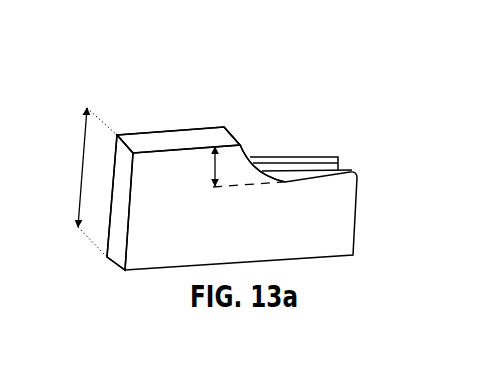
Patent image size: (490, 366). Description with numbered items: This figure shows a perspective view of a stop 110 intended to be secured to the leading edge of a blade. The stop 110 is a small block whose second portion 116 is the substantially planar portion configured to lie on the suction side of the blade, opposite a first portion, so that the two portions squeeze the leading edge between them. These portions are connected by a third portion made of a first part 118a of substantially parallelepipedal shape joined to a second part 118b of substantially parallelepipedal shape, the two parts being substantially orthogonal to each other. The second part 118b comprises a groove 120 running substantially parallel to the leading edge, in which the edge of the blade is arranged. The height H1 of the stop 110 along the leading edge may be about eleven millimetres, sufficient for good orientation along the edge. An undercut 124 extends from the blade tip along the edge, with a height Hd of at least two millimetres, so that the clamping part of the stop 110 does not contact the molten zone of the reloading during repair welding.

The stop 110 is at (343, 96).
The second portion 116 is at (340, 213).
The first part of the third portion 118a is at (118, 133).
The second part of the third portion 118b is at (178, 140).
The groove 120 is at (233, 131).
The undercut 124 is at (281, 150).
The height of the stop H1 is at (82, 173).
The height of the undercut Hd is at (213, 171).